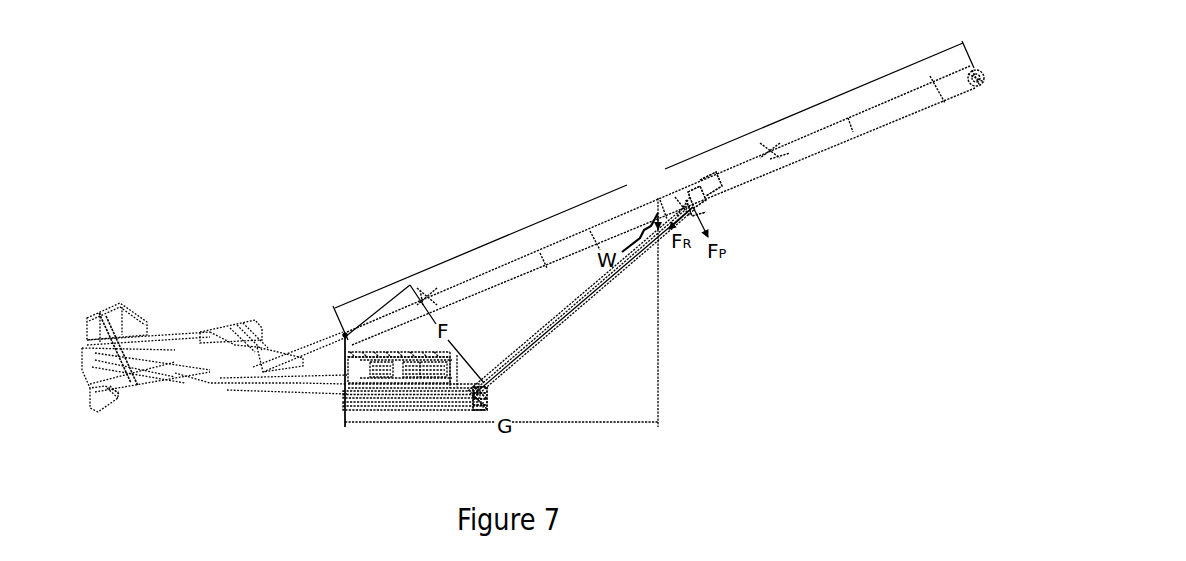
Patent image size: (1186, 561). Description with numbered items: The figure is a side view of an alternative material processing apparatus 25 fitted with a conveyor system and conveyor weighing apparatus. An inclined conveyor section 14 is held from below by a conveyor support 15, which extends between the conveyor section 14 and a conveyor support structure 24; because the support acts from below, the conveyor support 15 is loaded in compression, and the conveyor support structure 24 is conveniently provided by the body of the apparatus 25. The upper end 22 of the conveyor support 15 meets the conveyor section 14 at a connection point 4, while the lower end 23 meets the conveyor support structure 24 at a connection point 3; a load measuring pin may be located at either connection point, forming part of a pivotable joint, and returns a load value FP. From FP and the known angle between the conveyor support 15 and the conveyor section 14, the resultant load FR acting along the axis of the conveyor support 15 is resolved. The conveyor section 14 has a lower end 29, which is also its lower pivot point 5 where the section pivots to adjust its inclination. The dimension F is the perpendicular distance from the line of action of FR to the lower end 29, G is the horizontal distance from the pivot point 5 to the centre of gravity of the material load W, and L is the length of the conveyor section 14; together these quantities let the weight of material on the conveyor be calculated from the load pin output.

The material processing apparatus 25 is at (384, 196).
The conveyor section 14 is at (808, 147).
The connection point 4 is at (698, 204).
The end of conveyor support 22 is at (698, 204).
The lower pivot point 5 is at (345, 339).
The lower end of conveyor section 29 is at (345, 339).
The connection point 3 is at (483, 392).
The end of conveyor support 23 is at (483, 392).
The conveyor support 15 is at (605, 285).
The conveyor support structure 24 is at (490, 395).